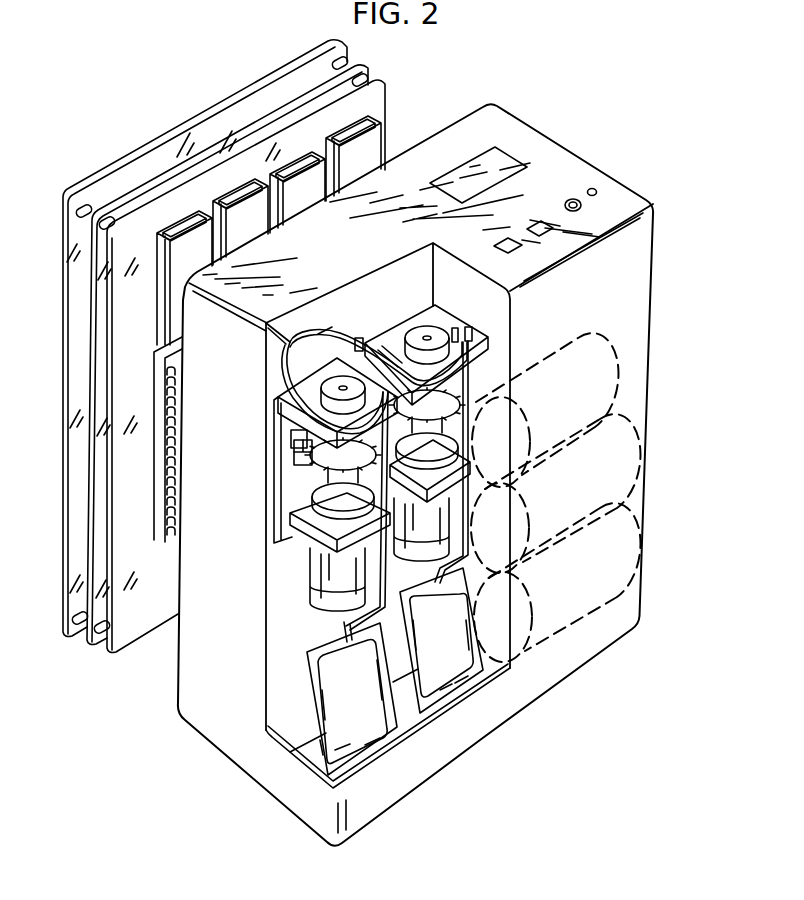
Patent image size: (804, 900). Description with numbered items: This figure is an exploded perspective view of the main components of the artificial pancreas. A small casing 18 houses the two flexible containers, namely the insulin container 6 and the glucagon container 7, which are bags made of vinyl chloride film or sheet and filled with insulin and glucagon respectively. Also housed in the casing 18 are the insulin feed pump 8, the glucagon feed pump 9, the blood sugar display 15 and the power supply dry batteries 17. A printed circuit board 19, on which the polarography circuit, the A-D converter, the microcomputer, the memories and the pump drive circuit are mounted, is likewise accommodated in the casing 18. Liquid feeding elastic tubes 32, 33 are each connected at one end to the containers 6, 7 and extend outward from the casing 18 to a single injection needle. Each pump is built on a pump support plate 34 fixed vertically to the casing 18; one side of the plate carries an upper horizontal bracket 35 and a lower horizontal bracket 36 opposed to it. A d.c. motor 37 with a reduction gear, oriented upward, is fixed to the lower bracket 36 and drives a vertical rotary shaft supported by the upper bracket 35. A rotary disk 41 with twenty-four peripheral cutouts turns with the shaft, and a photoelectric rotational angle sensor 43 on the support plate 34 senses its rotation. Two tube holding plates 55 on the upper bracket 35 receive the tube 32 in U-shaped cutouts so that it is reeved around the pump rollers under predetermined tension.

The insulin container 6 is at (360, 743).
The glucagon container 7 is at (447, 678).
The insulin feed pump 8 is at (326, 342).
The glucagon feed pump 9 is at (440, 338).
The blood sugar display 15 is at (503, 158).
The power supply dry batteries 17 is at (630, 549).
The casing 18 is at (233, 745).
The printed circuit board 19 is at (387, 97).
The liquid feeding elastic tube 32 is at (286, 343).
The liquid feeding elastic tube 33 is at (386, 345).
The pump support plate 34 is at (280, 497).
The horizontal bracket 35 is at (280, 396).
The horizontal bracket 36 is at (307, 527).
The d.c. motor 37 is at (323, 575).
The rotary disk 41 is at (297, 453).
The photoelectric rotational angle sensor 43 is at (300, 462).
The tube holding plates 55 is at (359, 338).